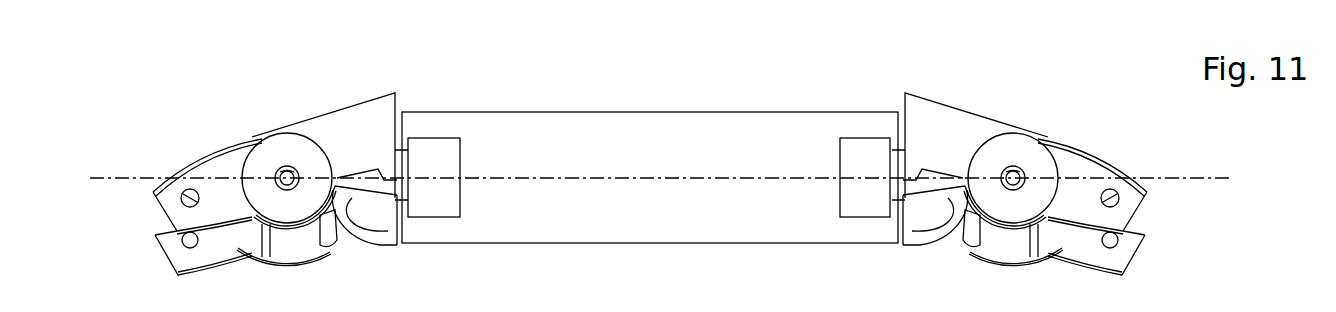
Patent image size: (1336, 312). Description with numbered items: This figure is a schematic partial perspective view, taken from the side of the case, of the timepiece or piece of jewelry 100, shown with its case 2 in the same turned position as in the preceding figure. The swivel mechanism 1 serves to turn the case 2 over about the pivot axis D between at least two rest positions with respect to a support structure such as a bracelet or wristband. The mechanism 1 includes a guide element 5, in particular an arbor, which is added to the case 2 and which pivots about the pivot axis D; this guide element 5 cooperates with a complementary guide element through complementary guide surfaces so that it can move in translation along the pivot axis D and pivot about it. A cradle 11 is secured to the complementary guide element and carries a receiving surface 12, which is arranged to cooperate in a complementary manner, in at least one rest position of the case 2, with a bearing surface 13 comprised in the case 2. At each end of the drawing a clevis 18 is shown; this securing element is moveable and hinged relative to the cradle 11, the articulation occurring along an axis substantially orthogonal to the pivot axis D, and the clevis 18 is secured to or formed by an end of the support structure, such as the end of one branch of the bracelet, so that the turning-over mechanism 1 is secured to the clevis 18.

The timepiece or piece of jewelry 100 is at (650, 178).
The swivel mechanism 1 is at (299, 197).
The case 2 is at (548, 130).
The guide element 5 is at (400, 196).
The cradle 11 is at (307, 145).
The receiving surface 12 is at (368, 226).
The bearing surface 13 is at (413, 153).
The clevis 18 is at (215, 182).
The pivot axis D is at (118, 181).